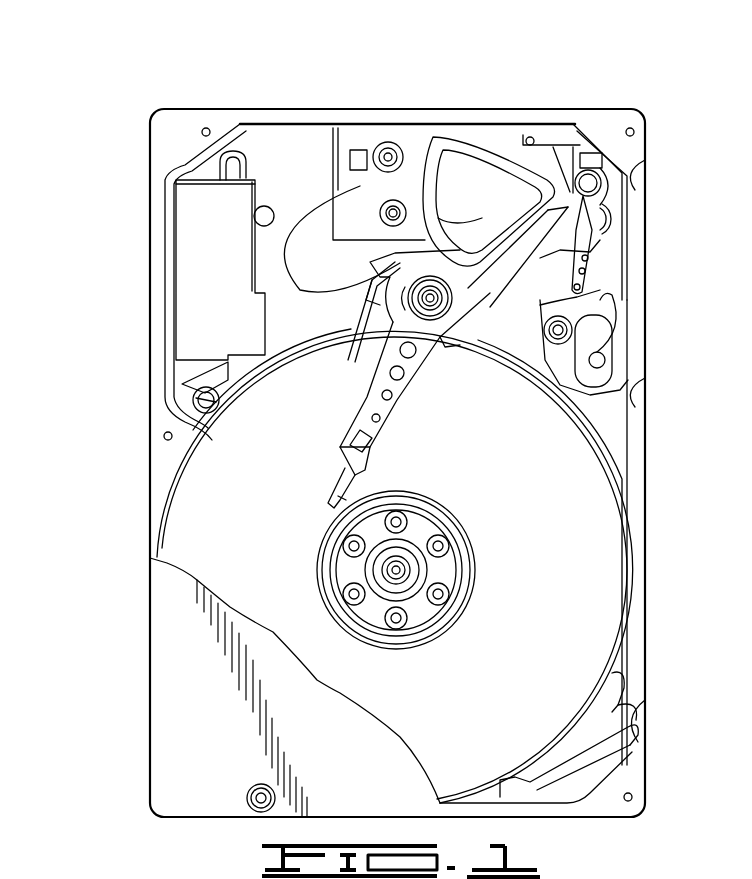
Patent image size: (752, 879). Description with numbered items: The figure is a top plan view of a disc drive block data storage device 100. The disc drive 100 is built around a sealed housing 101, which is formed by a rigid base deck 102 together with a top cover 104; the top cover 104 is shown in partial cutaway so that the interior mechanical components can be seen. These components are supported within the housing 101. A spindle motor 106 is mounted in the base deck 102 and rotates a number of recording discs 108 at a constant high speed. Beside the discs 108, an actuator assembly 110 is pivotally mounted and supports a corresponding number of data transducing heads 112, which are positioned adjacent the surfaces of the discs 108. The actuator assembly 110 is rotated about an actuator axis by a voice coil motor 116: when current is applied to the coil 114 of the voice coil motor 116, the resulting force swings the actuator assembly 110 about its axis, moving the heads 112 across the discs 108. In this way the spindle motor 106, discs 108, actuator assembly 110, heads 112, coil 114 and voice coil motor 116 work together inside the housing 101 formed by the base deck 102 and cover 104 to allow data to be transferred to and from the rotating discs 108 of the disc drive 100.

The disc drive block data storage device 100 is at (212, 80).
The sealed housing 101 is at (125, 170).
The rigid base deck 102 is at (263, 281).
The top cover 104 is at (173, 637).
The spindle motor 106 is at (412, 545).
The recording discs 108 is at (572, 617).
The actuator assembly 110 is at (440, 348).
The data transducing heads 112 is at (330, 503).
The coil 114 is at (475, 136).
The voice coil motor 116 is at (512, 136).